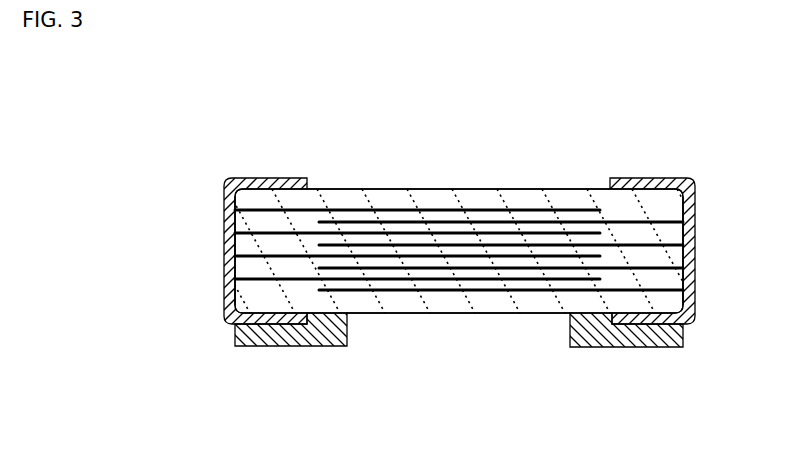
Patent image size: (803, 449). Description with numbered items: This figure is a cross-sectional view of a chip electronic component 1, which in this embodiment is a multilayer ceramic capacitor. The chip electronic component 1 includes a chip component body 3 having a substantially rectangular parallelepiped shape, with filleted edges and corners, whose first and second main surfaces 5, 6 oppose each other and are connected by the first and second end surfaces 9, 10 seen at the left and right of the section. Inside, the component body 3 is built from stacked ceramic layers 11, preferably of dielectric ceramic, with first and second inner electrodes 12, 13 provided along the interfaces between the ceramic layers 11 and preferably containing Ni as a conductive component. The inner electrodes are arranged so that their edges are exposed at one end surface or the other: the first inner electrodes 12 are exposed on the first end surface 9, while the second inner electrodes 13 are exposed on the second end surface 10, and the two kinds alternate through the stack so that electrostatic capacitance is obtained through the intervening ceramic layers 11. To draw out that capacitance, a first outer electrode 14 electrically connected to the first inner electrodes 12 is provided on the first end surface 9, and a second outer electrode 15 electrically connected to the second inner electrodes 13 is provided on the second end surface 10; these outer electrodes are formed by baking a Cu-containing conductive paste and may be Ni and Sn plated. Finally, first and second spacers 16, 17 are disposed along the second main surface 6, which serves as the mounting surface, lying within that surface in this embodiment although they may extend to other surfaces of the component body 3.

The chip electronic component 1 is at (470, 100).
The chip component body 3 is at (513, 190).
The first main surface 5 is at (433, 189).
The second main surface 6 is at (457, 313).
The first end surface 9 is at (236, 234).
The second end surface 10 is at (684, 233).
The ceramic layers 11 is at (548, 221).
The first inner electrodes 12 is at (366, 233).
The second inner electrodes 13 is at (510, 270).
The first outer electrode 14 is at (228, 187).
The second outer electrode 15 is at (690, 203).
The first spacer 16 is at (268, 340).
The second spacer 17 is at (625, 347).